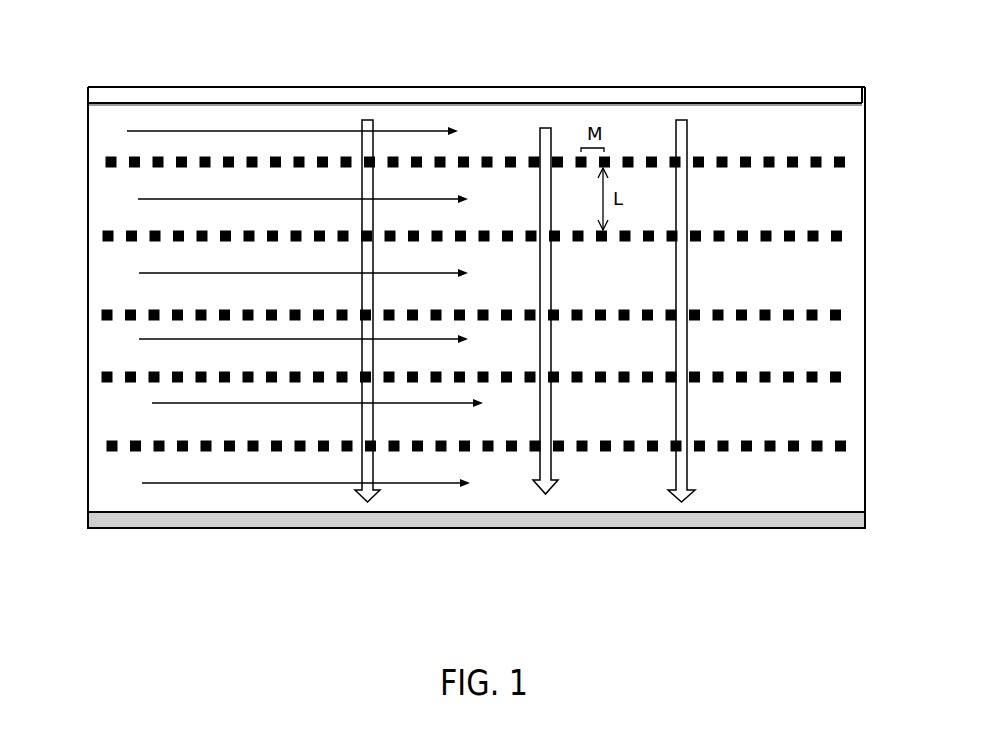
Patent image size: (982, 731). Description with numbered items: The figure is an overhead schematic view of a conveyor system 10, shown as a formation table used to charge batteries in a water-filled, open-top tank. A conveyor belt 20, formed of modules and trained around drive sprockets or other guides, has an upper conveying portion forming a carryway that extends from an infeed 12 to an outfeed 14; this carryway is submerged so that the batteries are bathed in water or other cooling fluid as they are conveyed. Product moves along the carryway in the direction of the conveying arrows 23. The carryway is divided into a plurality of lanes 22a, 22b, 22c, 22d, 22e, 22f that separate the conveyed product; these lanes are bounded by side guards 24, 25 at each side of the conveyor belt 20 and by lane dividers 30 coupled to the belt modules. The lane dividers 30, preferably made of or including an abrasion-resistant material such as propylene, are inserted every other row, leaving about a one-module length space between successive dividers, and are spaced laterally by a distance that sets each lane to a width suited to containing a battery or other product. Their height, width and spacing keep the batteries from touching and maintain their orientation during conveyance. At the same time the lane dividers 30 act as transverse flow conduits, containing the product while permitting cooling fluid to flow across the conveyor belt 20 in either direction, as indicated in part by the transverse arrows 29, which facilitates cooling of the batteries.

The conveyor system 10 is at (467, 66).
The infeed 12 is at (88, 237).
The outfeed 14 is at (867, 192).
The conveyor belt 20 is at (765, 128).
The lane 22a is at (97, 124).
The lane 22b is at (107, 193).
The lane 22c is at (112, 285).
The lane 22d is at (115, 345).
The lane 22e is at (108, 408).
The lane 22f is at (107, 490).
The conveying arrows 23 is at (170, 483).
The side guard 24 is at (297, 87).
The side guard 25 is at (460, 529).
The transverse arrows 29 is at (373, 118).
The lane dividers 30 is at (230, 157).